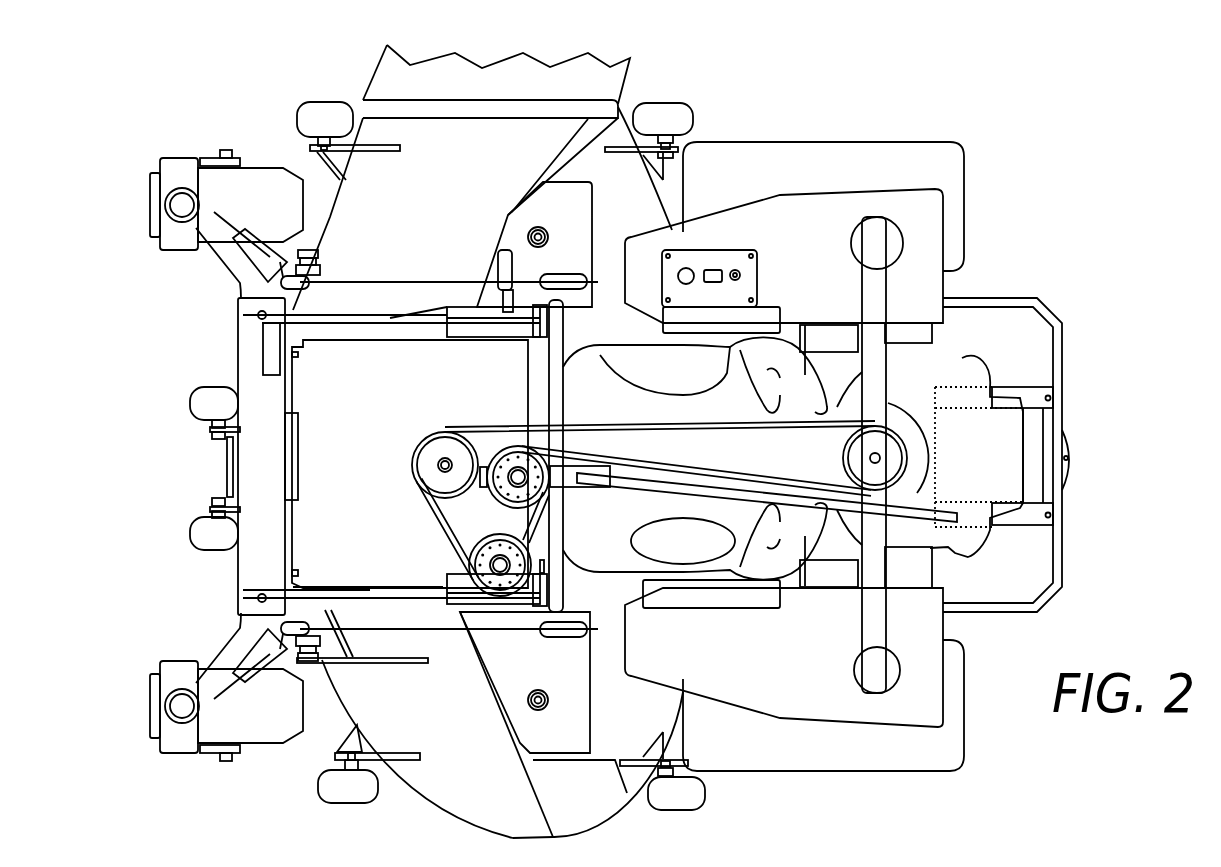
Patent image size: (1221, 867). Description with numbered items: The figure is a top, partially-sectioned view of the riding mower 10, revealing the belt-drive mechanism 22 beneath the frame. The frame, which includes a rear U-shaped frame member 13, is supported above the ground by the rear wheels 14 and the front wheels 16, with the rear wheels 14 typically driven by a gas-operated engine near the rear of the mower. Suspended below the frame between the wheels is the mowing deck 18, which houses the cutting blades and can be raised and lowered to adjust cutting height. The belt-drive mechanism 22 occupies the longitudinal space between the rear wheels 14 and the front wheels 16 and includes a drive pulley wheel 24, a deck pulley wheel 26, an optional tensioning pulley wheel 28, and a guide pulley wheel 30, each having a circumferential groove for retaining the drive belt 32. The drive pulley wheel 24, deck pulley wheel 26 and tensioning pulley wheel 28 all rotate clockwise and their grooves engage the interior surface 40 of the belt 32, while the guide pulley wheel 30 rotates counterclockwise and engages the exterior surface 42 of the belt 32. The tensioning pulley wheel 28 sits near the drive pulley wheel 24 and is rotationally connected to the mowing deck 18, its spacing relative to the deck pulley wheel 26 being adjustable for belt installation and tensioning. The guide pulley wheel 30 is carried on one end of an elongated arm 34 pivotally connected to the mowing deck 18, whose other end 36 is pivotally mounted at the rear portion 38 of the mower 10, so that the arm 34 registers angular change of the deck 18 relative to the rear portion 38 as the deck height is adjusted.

The riding mower 10 is at (280, 76).
The rear U-shaped frame member 13 is at (1065, 528).
The rear wheels 14 is at (802, 167).
The front wheels 16 is at (263, 192).
The mowing deck 18 is at (492, 805).
The belt-drive mechanism 22 is at (633, 533).
The drive pulley wheel 24 is at (890, 440).
The deck pulley wheel 26 is at (432, 455).
The tensioning pulley wheel 28 is at (477, 558).
The guide pulley wheel 30 is at (505, 462).
The drive belt 32 is at (640, 422).
The elongated arm 34 is at (893, 513).
The end of arm 36 is at (943, 507).
The rear portion 38 is at (993, 527).
The interior surface of belt 40 is at (763, 433).
The exterior surface of belt 42 is at (688, 470).